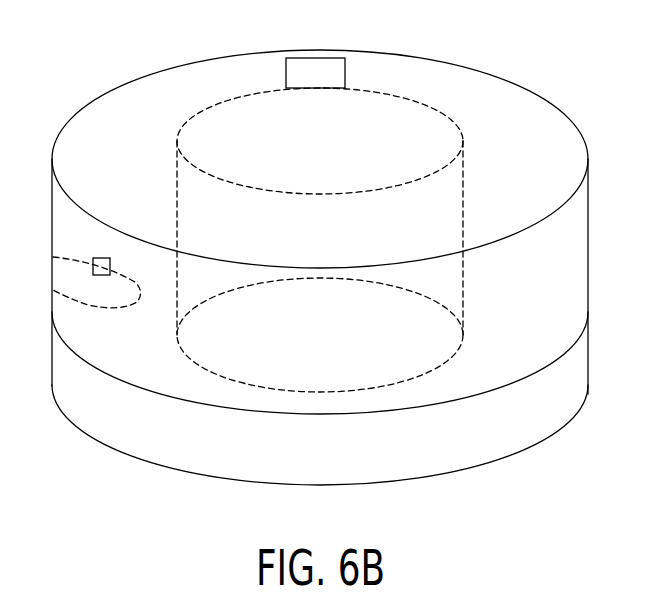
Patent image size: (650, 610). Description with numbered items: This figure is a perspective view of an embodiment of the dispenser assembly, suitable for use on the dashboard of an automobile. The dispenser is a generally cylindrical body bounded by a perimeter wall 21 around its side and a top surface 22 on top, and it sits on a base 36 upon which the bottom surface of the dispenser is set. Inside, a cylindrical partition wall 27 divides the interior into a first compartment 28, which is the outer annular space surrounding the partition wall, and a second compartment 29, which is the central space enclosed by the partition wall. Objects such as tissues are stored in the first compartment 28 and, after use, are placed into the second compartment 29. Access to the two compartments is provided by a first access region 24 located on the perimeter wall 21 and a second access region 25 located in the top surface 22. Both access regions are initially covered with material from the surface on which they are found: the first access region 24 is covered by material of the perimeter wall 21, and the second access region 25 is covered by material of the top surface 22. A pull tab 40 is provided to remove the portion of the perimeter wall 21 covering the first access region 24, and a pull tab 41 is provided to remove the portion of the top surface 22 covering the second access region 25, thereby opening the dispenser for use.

The perimeter wall 21 is at (567, 252).
The top surface 22 is at (78, 150).
The first access region 24 is at (125, 302).
The second access region 25 is at (250, 117).
The partition wall 27 is at (466, 217).
The first compartment 28 is at (532, 110).
The second compartment 29 is at (352, 243).
The base 36 is at (567, 373).
The pull tab 40 is at (94, 262).
The pull tab 41 is at (325, 73).